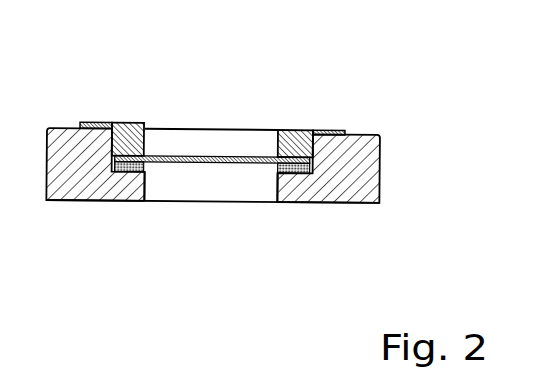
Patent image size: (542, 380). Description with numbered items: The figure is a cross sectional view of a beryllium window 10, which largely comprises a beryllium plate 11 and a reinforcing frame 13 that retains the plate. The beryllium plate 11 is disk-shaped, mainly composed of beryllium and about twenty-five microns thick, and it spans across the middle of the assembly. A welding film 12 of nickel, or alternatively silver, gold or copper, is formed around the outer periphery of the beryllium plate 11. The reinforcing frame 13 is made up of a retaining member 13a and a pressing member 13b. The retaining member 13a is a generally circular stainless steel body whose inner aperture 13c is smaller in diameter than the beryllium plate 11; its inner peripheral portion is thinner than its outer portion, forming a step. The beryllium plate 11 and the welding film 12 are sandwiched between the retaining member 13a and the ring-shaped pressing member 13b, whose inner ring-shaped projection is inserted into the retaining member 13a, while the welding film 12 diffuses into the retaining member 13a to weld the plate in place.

The beryllium window 10 is at (447, 58).
The beryllium plate 11 is at (225, 155).
The welding film 12 is at (132, 200).
The reinforcing frame 13 is at (362, 113).
The retaining member 13a is at (380, 172).
The pressing member 13b is at (298, 128).
The inner aperture 13c is at (242, 192).